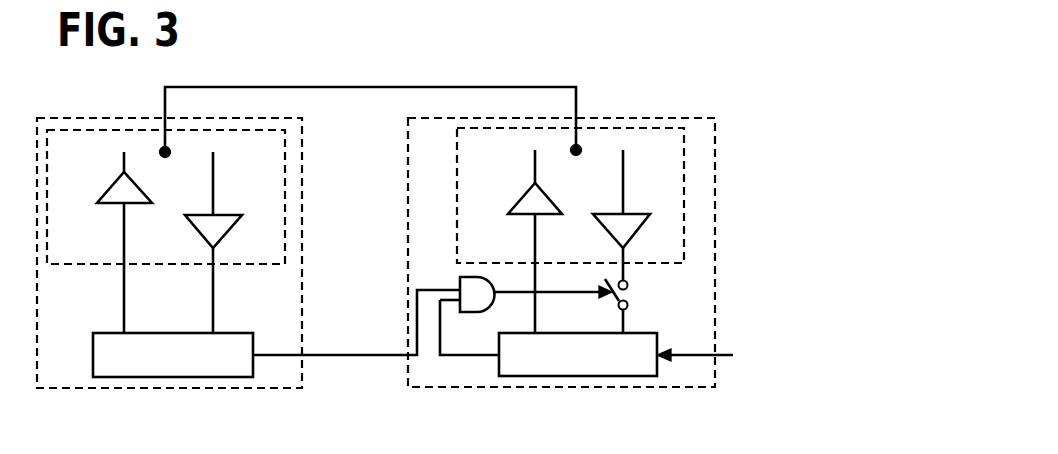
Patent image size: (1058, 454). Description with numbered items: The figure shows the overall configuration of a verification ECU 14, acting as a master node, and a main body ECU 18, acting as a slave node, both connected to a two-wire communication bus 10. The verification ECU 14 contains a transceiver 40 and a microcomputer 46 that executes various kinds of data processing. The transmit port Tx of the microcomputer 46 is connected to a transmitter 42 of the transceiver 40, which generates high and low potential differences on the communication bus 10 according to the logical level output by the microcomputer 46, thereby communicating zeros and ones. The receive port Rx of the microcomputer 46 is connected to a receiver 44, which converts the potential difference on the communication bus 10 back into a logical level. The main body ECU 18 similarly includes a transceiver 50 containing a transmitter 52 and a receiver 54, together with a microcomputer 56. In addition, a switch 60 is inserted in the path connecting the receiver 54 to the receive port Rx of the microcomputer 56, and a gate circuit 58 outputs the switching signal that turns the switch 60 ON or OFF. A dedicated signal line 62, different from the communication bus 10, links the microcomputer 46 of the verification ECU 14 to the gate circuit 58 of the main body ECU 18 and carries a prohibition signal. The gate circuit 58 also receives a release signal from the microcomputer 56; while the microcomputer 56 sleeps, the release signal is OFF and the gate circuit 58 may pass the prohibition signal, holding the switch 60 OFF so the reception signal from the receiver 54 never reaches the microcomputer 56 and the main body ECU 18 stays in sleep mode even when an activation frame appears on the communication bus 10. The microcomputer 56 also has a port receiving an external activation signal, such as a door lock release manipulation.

The communication bus 10 is at (325, 87).
The verification ECU 14 is at (70, 118).
The main body ECU 18 is at (633, 118).
The transceiver 40 is at (285, 178).
The transmitter 42 is at (118, 203).
The receiver 44 is at (220, 213).
The microcomputer 46 is at (232, 333).
The transceiver 50 is at (685, 183).
The transmitter 52 is at (520, 213).
The receiver 54 is at (630, 213).
The microcomputer 56 is at (657, 333).
The gate circuit 58 is at (458, 283).
The switch 60 is at (608, 295).
The signal line 62 is at (355, 357).